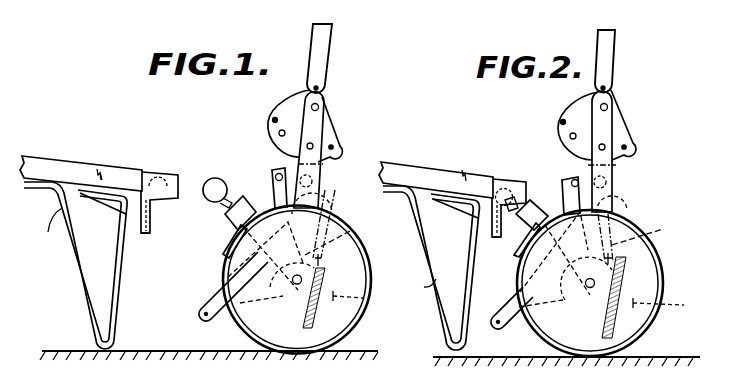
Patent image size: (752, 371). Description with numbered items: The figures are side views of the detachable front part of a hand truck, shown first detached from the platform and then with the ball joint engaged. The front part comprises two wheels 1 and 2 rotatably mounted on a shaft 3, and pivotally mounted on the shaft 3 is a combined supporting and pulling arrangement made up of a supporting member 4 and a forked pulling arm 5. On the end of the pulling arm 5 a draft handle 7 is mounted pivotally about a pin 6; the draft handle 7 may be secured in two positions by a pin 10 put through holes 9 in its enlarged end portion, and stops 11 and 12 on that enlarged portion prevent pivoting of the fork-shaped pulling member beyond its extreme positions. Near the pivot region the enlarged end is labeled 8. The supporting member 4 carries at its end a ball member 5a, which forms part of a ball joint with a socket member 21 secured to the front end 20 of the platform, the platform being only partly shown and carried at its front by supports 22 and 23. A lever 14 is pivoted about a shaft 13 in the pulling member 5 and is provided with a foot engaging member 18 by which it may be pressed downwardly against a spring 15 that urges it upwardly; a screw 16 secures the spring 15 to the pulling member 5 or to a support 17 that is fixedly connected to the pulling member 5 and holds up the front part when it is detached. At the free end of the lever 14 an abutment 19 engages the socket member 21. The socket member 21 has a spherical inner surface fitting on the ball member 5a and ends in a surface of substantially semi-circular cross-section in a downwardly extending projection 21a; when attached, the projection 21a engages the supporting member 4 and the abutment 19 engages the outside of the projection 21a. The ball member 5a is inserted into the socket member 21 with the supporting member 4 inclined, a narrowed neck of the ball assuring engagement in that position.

In FIG. 1, the wheel 1 is at (333, 317).
In FIG. 2, the wheel 1 is at (649, 285).
In FIG. 1, the wheel 2 is at (355, 308).
In FIG. 2, the wheel 2 is at (666, 310).
In FIG. 1, the shaft 3 is at (290, 284).
In FIG. 2, the shaft 3 is at (584, 290).
In FIG. 1, the supporting member 4 is at (224, 179).
In FIG. 2, the supporting member 4 is at (537, 217).
In FIG. 1, the forked pulling arm 5 is at (300, 165).
In FIG. 2, the forked pulling arm 5 is at (608, 166).
In FIG. 1, the ball member 5a is at (221, 200).
In FIG. 1, the pin 6 is at (319, 107).
In FIG. 2, the pin 6 is at (608, 107).
In FIG. 1, the draft handle 7 is at (315, 34).
In FIG. 2, the draft handle 7 is at (612, 43).
In FIG. 1, the pivot 8 is at (324, 91).
In FIG. 2, the pivot 8 is at (596, 89).
In FIG. 1, the holes 9 is at (279, 133).
In FIG. 2, the holes 9 is at (570, 137).
In FIG. 1, the pin 10 is at (313, 145).
In FIG. 2, the pin 10 is at (607, 141).
In FIG. 1, the stop 11 is at (275, 117).
In FIG. 2, the stop 11 is at (563, 119).
In FIG. 1, the stop 12 is at (331, 151).
In FIG. 2, the stop 12 is at (630, 148).
In FIG. 1, the shaft 13 is at (318, 194).
In FIG. 2, the shaft 13 is at (606, 186).
In FIG. 1, the lever 14 is at (276, 196).
In FIG. 2, the lever 14 is at (570, 197).
In FIG. 1, the spring 15 is at (305, 253).
In FIG. 2, the spring 15 is at (605, 253).
In FIG. 1, the screw 16 is at (328, 256).
In FIG. 2, the screw 16 is at (612, 257).
In FIG. 1, the support 17 is at (202, 305).
In FIG. 2, the support 17 is at (509, 306).
In FIG. 1, the foot engaging member 18 is at (276, 173).
In FIG. 2, the foot engaging member 18 is at (577, 178).
In FIG. 1, the abutment 19 is at (230, 230).
In FIG. 2, the abutment 19 is at (516, 243).
In FIG. 1, the front end of the platform 20 is at (95, 168).
In FIG. 1, the socket member 21 is at (167, 177).
In FIG. 1, the projection 21a is at (143, 242).
In FIG. 2, the projection 21a is at (491, 234).
In FIG. 1, the support 22 is at (92, 298).
In FIG. 2, the support 22 is at (444, 325).
In FIG. 1, the support 23 is at (45, 231).
In FIG. 2, the support 23 is at (417, 285).